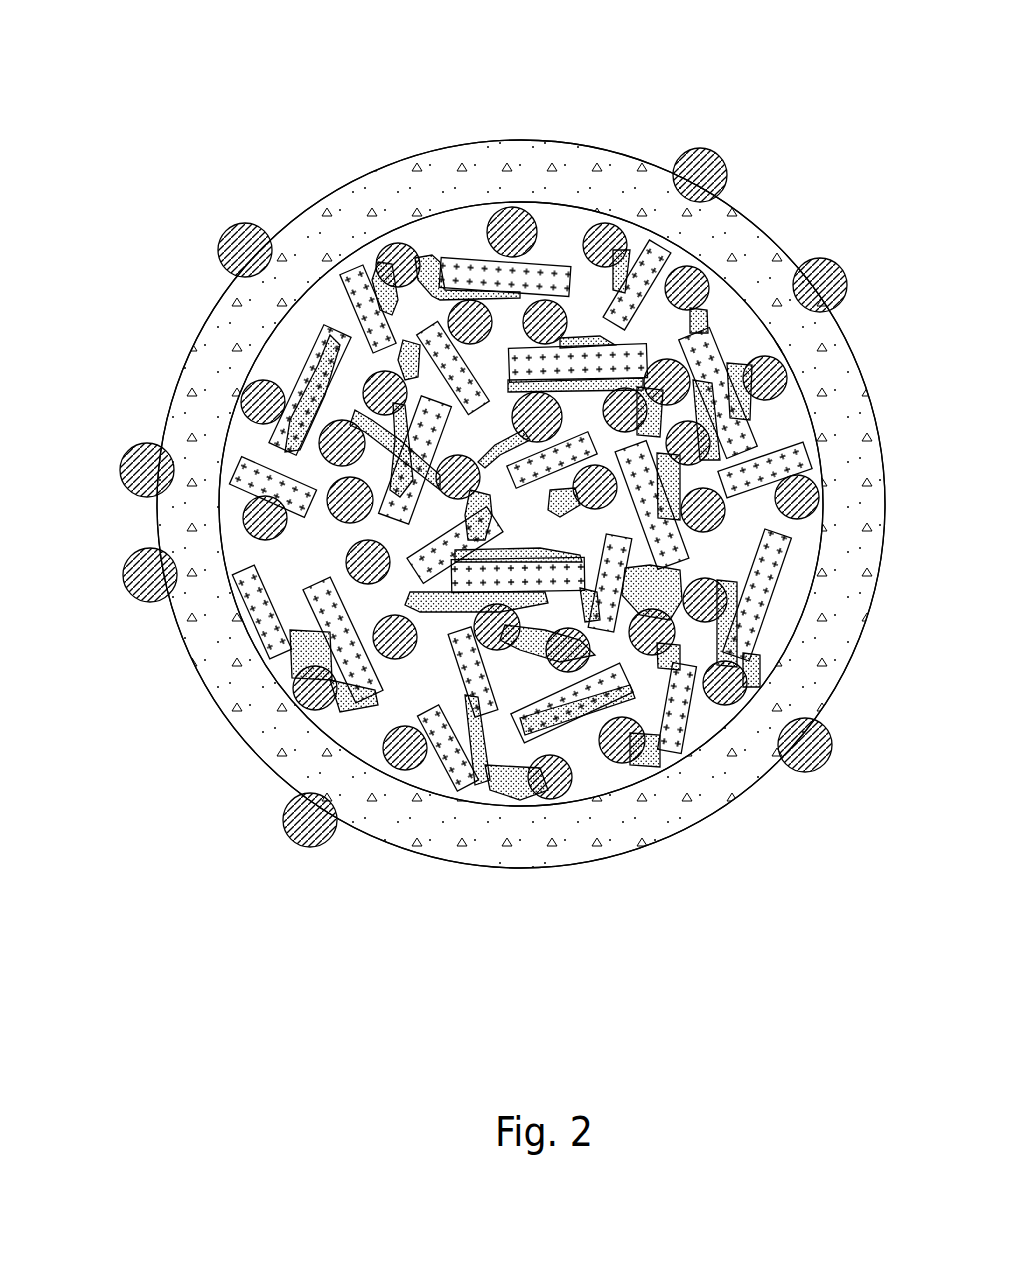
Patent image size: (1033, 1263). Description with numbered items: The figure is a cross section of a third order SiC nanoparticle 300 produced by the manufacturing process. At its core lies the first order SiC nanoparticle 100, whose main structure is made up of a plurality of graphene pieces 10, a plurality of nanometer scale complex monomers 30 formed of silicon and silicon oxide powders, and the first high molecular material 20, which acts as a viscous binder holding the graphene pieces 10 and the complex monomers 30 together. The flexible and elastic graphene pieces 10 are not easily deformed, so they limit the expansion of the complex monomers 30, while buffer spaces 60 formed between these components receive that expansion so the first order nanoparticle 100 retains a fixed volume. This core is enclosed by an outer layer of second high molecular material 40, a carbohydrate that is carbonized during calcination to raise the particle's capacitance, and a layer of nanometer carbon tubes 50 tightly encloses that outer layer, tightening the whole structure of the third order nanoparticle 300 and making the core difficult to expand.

The third order SiC nanoparticle 300 is at (287, 212).
The first order SiC nanoparticle 100 is at (437, 212).
The second high molecular material 40 is at (178, 413).
The nanometer carbon tubes 50 is at (708, 168).
The graphene pieces 10 is at (462, 258).
The first high molecular material 20 is at (708, 320).
The complex monomers 30 is at (387, 243).
The buffer spaces 60 is at (585, 298).